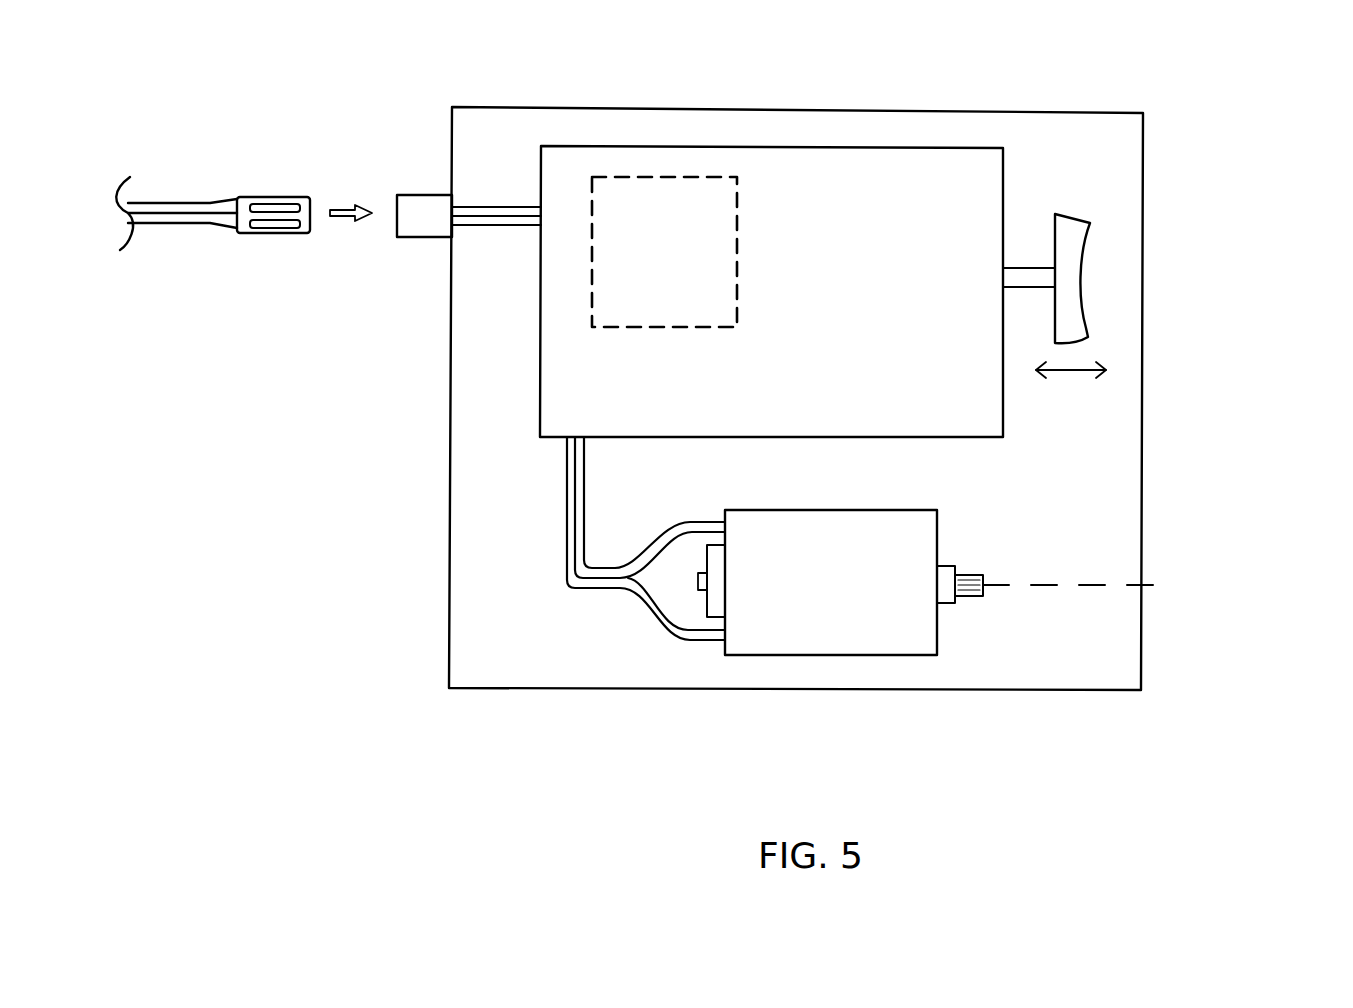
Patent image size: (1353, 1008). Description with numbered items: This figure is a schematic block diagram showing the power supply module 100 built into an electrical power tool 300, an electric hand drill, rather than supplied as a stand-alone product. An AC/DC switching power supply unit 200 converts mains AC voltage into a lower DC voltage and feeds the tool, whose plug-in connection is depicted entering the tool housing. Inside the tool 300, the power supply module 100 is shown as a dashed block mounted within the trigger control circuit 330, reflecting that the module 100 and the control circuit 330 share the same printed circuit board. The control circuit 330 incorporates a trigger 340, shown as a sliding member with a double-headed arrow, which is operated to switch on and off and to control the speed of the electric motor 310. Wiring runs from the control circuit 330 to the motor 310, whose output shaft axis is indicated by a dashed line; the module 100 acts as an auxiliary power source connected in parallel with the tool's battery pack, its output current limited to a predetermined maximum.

The power supply module 100 is at (633, 177).
The AC/DC switching power supply unit 200 is at (209, 213).
The electrical power tool 300 is at (1205, 106).
The electric motor 310 is at (915, 632).
The trigger control circuit 330 is at (815, 162).
The trigger 340 is at (1072, 273).